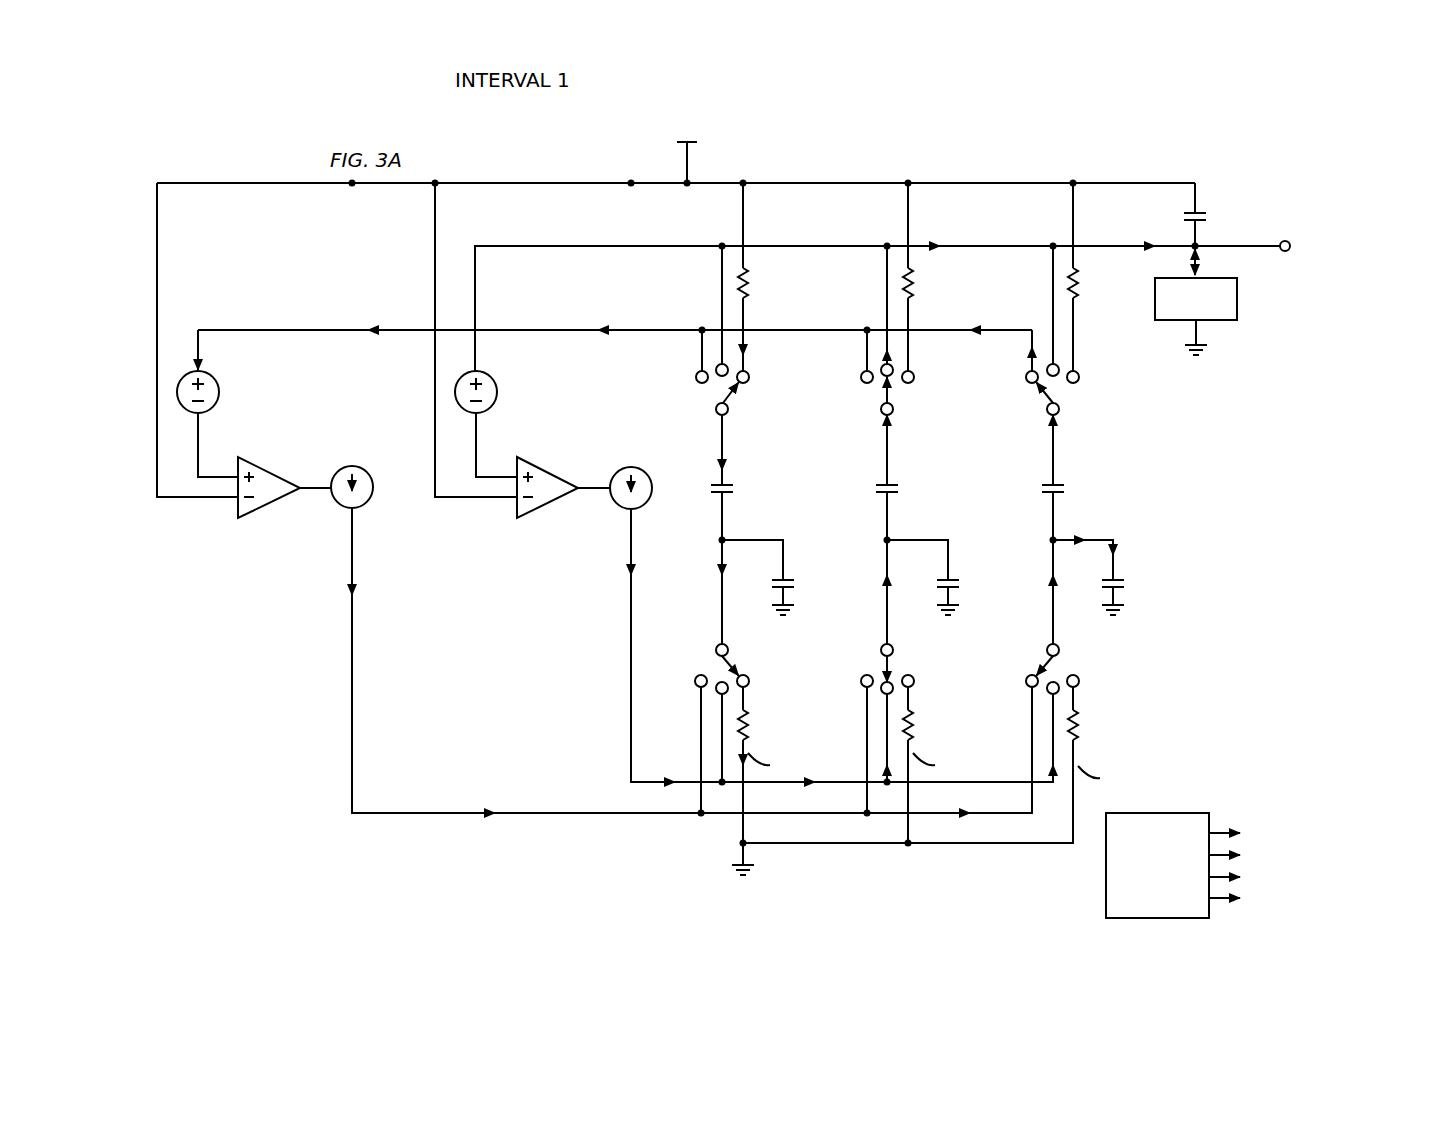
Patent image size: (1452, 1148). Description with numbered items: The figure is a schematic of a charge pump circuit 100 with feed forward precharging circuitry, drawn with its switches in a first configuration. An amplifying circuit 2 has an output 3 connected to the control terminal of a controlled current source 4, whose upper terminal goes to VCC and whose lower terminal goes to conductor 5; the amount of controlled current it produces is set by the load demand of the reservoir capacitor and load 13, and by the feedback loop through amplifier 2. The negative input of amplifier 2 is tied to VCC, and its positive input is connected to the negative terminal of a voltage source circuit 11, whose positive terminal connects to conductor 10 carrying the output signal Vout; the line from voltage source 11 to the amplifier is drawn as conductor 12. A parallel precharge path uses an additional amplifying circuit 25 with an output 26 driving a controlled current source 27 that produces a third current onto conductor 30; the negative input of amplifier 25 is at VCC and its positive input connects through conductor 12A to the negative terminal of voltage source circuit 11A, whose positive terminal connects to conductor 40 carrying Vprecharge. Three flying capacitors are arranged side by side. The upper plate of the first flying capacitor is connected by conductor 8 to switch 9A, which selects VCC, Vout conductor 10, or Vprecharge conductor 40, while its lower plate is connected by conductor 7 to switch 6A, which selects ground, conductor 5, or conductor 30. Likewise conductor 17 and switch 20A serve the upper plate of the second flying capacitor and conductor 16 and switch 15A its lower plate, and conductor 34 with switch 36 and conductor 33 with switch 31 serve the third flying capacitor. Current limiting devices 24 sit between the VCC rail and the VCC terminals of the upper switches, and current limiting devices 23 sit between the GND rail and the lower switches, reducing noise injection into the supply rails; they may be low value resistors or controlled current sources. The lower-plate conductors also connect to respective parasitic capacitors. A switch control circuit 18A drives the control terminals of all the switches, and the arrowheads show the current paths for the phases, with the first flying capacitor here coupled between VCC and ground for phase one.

The charge pump circuit 100 is at (530, 150).
The conductor 10 is at (475, 313).
The conductor 40 is at (201, 328).
The voltage source circuit 11A is at (219, 392).
The conductor 12A is at (198, 447).
The amplifying circuit 25 is at (274, 467).
The output 26 is at (315, 490).
The controlled current source 27 is at (364, 470).
The conductor 30 is at (352, 640).
The voltage source circuit 11 is at (497, 392).
The conductor 12 is at (476, 447).
The amplifying circuit 2 is at (546, 467).
The output 3 is at (595, 486).
The controlled current source 4 is at (615, 504).
The conductor 5 is at (630, 640).
The current limiting devices 24 is at (747, 284).
The switch 9A is at (705, 405).
The conductor 8 is at (722, 451).
The conductor 7 is at (722, 526).
The switch 6A is at (699, 660).
The current limiting devices 23 is at (748, 729).
The switch 20A is at (870, 405).
The conductor 17 is at (887, 451).
The conductor 16 is at (887, 526).
The switch 15A is at (864, 660).
The switch 36 is at (1025, 405).
The conductor 34 is at (1053, 451).
The conductor 33 is at (1053, 526).
The switch 31 is at (1027, 660).
The load 13 is at (1212, 322).
The switch control circuit 18A is at (1106, 870).